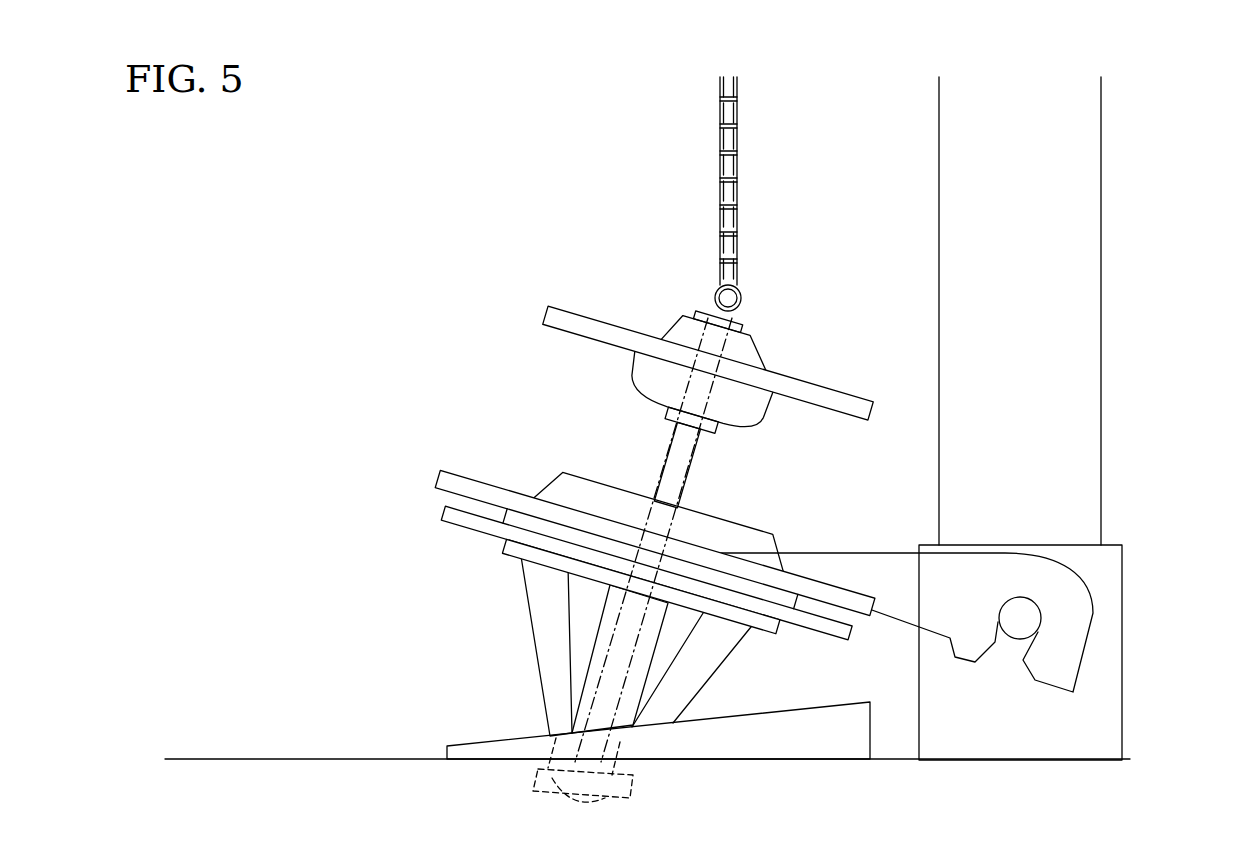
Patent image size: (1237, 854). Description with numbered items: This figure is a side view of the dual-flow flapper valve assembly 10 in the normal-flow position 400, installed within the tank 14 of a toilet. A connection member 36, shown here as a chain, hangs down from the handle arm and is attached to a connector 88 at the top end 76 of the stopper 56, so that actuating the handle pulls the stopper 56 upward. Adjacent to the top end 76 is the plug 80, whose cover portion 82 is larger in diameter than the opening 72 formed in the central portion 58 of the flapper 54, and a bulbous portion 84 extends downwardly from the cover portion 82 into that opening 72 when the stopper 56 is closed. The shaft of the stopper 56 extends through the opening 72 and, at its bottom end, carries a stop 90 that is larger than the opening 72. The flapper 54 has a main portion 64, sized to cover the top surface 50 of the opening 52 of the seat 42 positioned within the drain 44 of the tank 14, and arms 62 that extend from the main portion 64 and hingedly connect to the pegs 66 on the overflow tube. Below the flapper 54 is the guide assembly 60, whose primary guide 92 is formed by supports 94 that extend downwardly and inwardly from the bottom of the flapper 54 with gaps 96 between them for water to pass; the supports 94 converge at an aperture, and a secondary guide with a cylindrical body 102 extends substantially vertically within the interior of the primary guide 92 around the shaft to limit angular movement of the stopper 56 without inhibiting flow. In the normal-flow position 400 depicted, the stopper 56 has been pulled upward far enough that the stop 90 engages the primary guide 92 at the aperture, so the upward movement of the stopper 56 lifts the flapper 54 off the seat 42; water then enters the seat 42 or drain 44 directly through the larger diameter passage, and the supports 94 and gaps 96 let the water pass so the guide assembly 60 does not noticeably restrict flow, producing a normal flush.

The dual-flow flapper valve assembly 10 is at (383, 574).
The tank 14 is at (262, 757).
The connection member 36 is at (740, 137).
The seat 42 is at (528, 742).
The drain 44 is at (656, 760).
The top surface 50 is at (473, 745).
The opening 52 is at (540, 737).
The flapper 54 is at (436, 480).
The stopper 56 is at (625, 310).
The central portion 58 is at (545, 493).
The guide assembly 60 is at (486, 667).
The arms 62 is at (1005, 554).
The main portion 64 is at (453, 486).
The pegs 66 is at (1015, 640).
The opening 72 is at (637, 490).
The top end 76 is at (764, 350).
The plug 80 is at (780, 418).
The cover portion 82 is at (545, 311).
The bulbous portion 84 is at (753, 428).
The connector 88 is at (715, 302).
The stop 90 is at (577, 800).
The primary guide 92 is at (514, 590).
The supports 94 is at (698, 676).
The gaps 96 is at (691, 622).
The cylindrical body 102 is at (588, 665).
The normal-flow position 400 is at (339, 302).